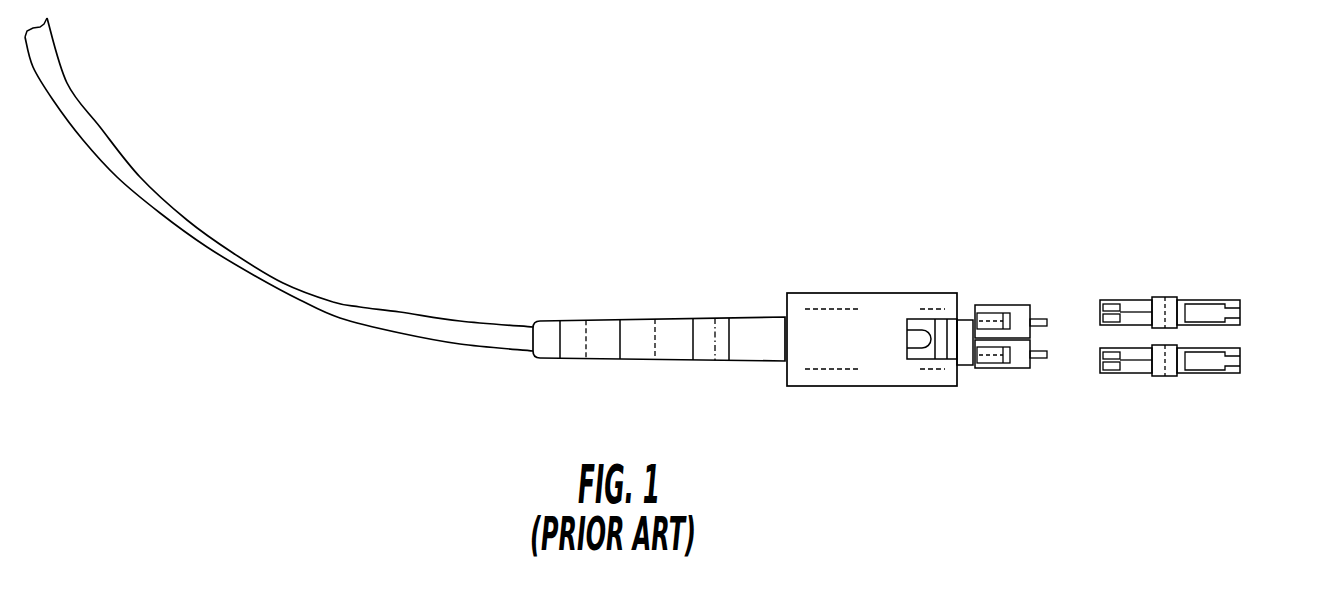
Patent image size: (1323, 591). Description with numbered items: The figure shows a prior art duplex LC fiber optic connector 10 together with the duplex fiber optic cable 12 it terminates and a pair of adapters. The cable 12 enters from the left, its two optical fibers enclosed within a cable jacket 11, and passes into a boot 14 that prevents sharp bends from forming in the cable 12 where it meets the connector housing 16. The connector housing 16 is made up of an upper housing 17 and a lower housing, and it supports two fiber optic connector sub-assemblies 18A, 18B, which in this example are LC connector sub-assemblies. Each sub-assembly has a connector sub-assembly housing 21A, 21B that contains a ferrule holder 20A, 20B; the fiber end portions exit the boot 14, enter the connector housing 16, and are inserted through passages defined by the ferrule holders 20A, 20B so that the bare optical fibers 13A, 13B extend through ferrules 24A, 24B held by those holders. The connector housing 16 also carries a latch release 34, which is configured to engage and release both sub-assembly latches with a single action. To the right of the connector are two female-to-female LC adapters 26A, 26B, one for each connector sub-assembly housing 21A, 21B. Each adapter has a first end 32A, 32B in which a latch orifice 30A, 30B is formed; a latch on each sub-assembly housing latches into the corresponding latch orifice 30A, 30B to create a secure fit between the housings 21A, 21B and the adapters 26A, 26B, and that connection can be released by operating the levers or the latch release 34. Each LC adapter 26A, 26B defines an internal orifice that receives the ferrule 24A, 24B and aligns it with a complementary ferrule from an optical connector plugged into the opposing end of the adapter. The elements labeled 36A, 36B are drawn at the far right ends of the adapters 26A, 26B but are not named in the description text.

The duplex LC fiber optic connector 10 is at (1057, 217).
The cable jacket 11 is at (395, 312).
The duplex fiber optic cable 12 is at (257, 253).
The bare optical fiber 13A is at (1046, 319).
The bare optical fiber 13B is at (1045, 360).
The boot 14 is at (610, 320).
The connector housing 16 is at (817, 387).
The upper housing 17 is at (868, 388).
The fiber optic connector sub-assembly 18A is at (991, 301).
The fiber optic connector sub-assembly 18B is at (988, 371).
The ferrule holder 20A is at (963, 318).
The ferrule holder 20B is at (963, 367).
The connector sub-assembly housing 21A is at (985, 305).
The connector sub-assembly housing 21B is at (977, 368).
The ferrule 24A is at (1028, 306).
The ferrule 24B is at (1028, 370).
The LC adapter 26A is at (1195, 300).
The LC adapter 26B is at (1213, 374).
The latch orifice 30A is at (1122, 314).
The latch orifice 30B is at (1120, 360).
The first end 32A is at (1100, 312).
The first end 32B is at (1099, 362).
The latch release 34 is at (913, 362).
The alignment sleeve 36A is at (1240, 312).
The alignment sleeve 36B is at (1242, 362).